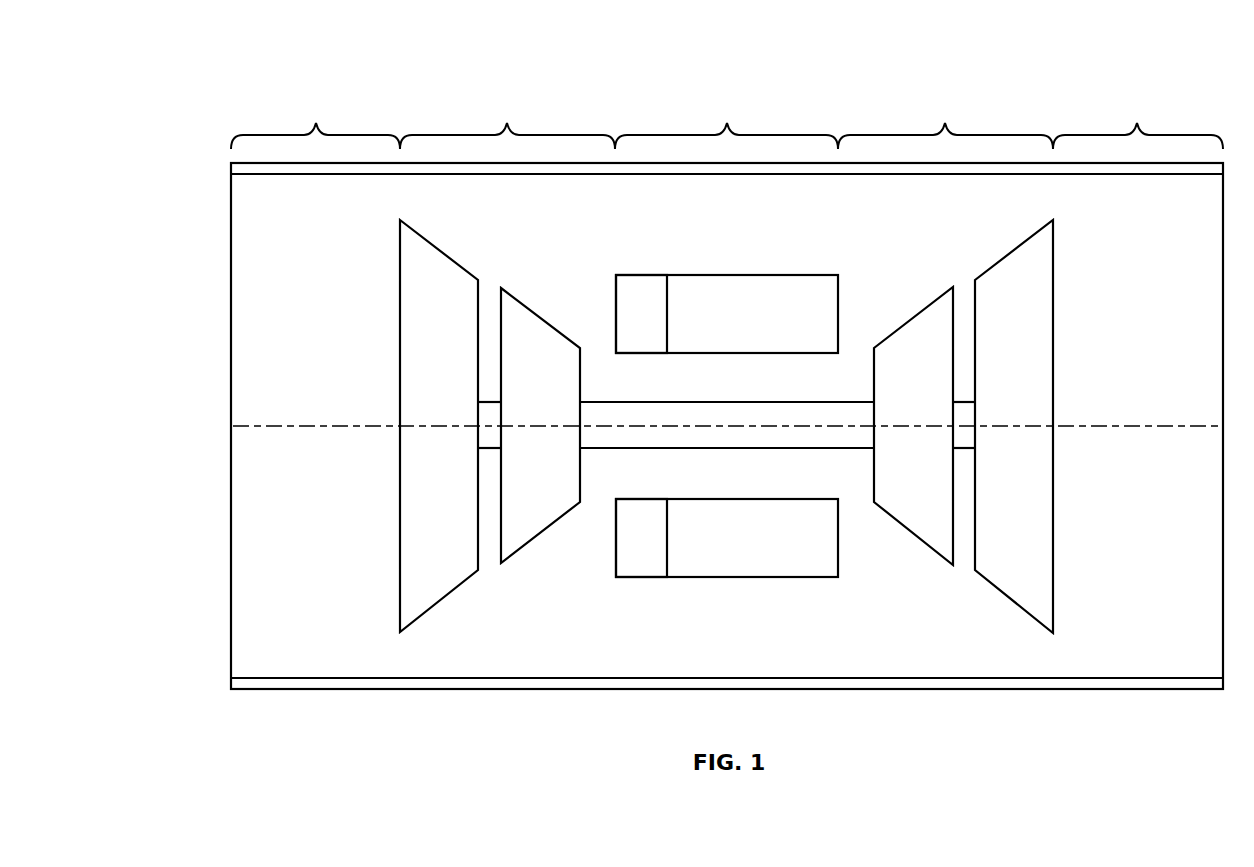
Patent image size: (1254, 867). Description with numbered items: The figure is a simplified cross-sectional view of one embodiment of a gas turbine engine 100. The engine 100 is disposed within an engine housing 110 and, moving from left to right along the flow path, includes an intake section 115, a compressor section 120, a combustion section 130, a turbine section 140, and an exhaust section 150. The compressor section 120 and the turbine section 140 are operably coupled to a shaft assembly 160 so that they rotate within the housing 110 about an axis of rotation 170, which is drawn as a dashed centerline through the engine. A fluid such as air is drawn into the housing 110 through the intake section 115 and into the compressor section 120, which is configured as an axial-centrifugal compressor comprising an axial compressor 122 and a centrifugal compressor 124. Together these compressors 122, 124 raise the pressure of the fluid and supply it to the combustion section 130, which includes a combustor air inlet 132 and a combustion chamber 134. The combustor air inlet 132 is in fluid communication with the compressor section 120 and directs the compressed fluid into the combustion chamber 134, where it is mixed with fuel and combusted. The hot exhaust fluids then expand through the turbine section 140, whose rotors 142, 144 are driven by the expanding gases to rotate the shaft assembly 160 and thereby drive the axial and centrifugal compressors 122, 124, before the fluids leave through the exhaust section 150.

The gas turbine engine 100 is at (176, 84).
The engine housing 110 is at (300, 682).
The intake section 115 is at (316, 123).
The compressor section 120 is at (507, 123).
The axial compressor 122 is at (440, 605).
The centrifugal compressor 124 is at (520, 553).
The combustion section 130 is at (727, 123).
The combustor air inlet 132 is at (641, 286).
The combustion chamber 134 is at (755, 286).
The turbine section 140 is at (945, 123).
The rotor 142 is at (930, 553).
The rotor 144 is at (1013, 605).
The exhaust section 150 is at (1137, 123).
The shaft assembly 160 is at (758, 394).
The axis of rotation 170 is at (243, 420).